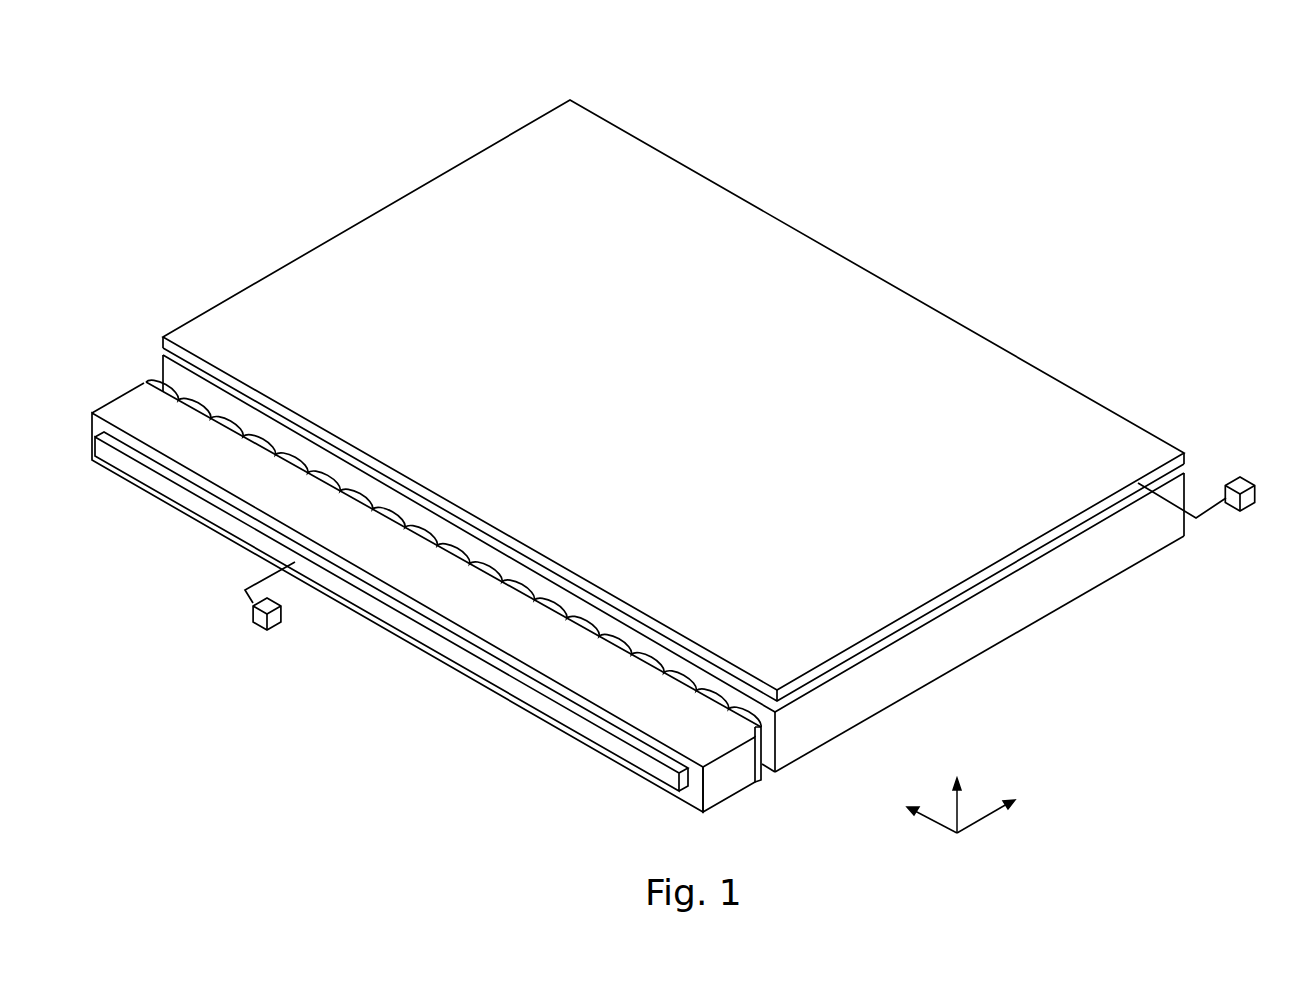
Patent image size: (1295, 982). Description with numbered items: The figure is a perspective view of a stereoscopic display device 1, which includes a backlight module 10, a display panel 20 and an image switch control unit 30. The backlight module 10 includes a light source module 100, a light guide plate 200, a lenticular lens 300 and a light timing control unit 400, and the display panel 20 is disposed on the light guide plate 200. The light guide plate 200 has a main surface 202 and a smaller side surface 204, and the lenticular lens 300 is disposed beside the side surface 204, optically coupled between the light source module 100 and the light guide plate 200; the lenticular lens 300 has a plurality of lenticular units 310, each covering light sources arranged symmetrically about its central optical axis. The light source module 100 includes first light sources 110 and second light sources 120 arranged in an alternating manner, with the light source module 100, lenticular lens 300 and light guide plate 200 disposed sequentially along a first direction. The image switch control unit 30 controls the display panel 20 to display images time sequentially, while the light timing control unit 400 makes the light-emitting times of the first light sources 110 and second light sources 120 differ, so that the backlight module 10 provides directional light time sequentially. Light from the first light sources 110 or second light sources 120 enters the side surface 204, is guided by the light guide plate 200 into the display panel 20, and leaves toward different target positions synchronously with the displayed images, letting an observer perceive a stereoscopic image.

The stereoscopic display device 1 is at (116, 82).
The backlight module 10 is at (1150, 233).
The display panel 20 is at (1048, 410).
The image switch control unit 30 is at (1250, 505).
The light source module 100 is at (692, 787).
The first light sources 110 is at (462, 657).
The second light sources 120 is at (512, 687).
The light guide plate 200 is at (1122, 547).
The main surface 202 is at (1006, 646).
The side surface 204 is at (773, 746).
The lenticular lens 300 is at (730, 783).
The lenticular units 310 is at (152, 378).
The light timing control unit 400 is at (245, 617).